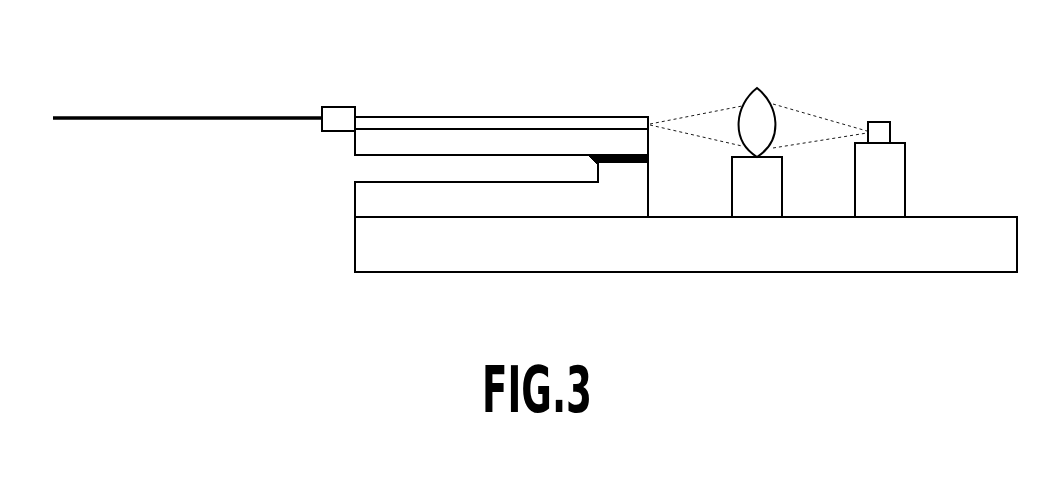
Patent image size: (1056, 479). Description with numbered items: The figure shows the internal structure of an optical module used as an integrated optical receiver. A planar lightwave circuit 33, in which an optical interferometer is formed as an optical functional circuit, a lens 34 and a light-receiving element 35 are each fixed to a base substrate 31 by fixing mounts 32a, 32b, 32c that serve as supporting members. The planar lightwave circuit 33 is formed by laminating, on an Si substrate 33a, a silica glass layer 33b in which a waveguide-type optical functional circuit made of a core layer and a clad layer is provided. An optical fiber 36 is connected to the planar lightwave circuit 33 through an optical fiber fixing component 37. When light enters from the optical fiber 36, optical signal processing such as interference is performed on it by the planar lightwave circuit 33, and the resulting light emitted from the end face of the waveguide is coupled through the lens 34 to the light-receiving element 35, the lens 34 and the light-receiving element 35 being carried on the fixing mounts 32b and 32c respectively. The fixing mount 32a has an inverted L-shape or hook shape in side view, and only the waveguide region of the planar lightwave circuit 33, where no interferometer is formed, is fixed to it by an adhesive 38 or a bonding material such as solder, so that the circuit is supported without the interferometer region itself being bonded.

The base substrate 31 is at (985, 217).
The fixing mount 32a is at (355, 202).
The fixing mount 32b is at (758, 195).
The fixing mount 32c is at (888, 195).
The planar lightwave circuit 33 is at (507, 168).
The Si substrate 33a is at (350, 135).
The silica glass layer 33b is at (637, 115).
The lens 34 is at (772, 93).
The light-receiving element 35 is at (883, 122).
The optical fiber 36 is at (200, 117).
The optical fiber fixing component 37 is at (345, 107).
The adhesive 38 is at (650, 157).